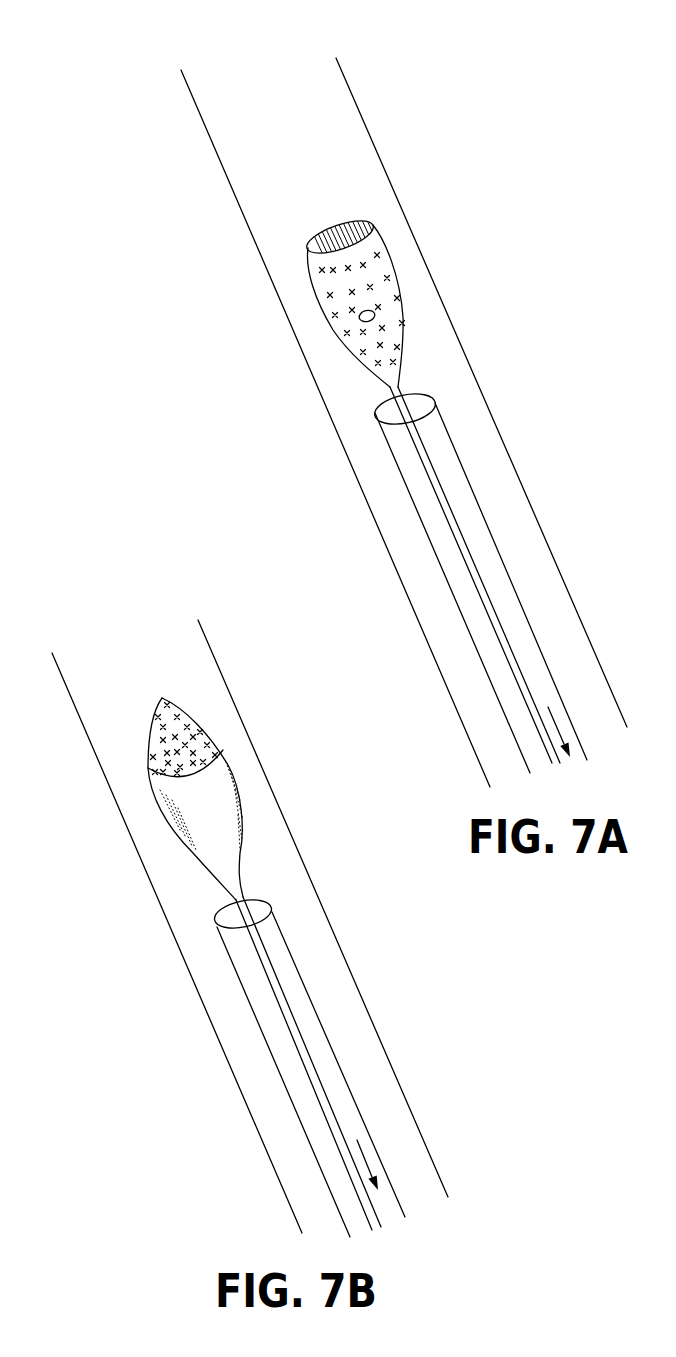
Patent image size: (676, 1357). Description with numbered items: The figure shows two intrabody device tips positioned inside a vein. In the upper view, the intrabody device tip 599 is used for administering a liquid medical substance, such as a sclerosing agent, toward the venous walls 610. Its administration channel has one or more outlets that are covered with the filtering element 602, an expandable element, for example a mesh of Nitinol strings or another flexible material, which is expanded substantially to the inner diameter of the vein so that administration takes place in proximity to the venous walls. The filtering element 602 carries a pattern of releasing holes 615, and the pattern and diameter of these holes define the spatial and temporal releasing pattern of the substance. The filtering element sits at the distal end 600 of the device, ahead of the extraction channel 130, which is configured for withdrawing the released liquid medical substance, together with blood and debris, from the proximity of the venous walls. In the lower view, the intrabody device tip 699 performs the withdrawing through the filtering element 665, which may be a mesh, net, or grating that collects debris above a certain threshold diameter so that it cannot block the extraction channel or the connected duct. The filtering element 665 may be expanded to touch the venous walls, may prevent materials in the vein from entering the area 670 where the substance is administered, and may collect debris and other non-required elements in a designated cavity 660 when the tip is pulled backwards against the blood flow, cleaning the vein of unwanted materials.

In FIG. 7A, the intrabody device tip 599 is at (266, 83).
In FIG. 7A, the vessel wall 610 is at (270, 208).
In FIG. 7A, the filtering element 602 is at (390, 248).
In FIG. 7A, the releasing holes 615 is at (400, 323).
In FIG. 7A, the distal end of catheter sheath 600 is at (420, 442).
In FIG. 7A, the extraction channel 130 is at (435, 530).
In FIG. 7B, the intrabody device tip 699 is at (152, 602).
In FIG. 7B, the designated cavity 660 is at (225, 757).
In FIG. 7B, the filtering element 665 is at (148, 768).
In FIG. 7B, the area where the liquid medical substance is administered 670 is at (292, 837).